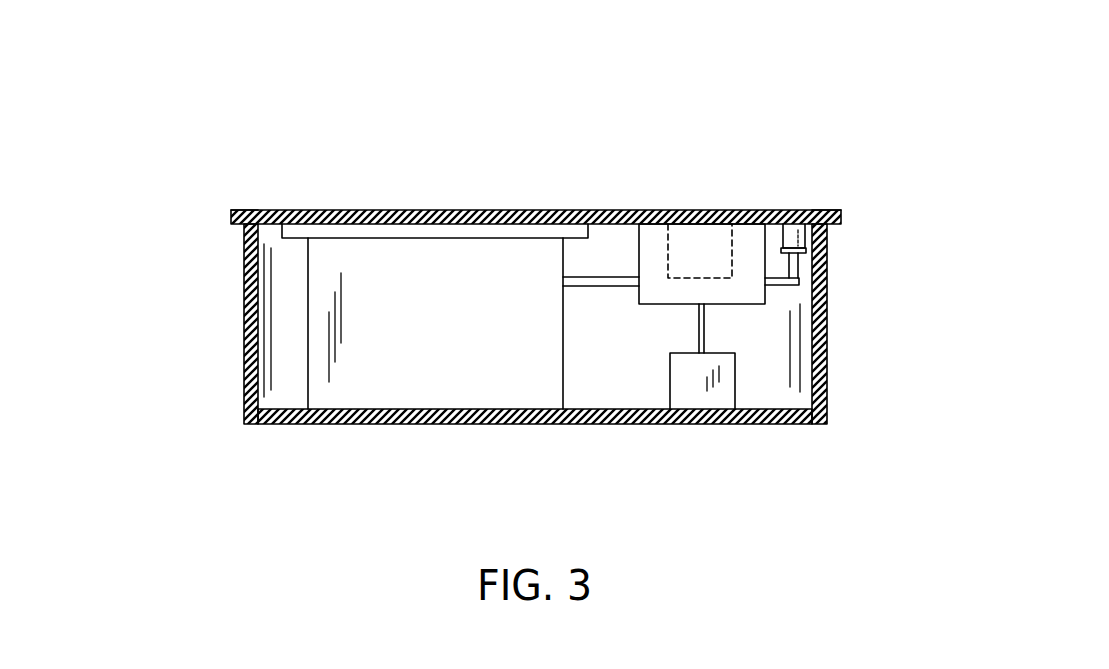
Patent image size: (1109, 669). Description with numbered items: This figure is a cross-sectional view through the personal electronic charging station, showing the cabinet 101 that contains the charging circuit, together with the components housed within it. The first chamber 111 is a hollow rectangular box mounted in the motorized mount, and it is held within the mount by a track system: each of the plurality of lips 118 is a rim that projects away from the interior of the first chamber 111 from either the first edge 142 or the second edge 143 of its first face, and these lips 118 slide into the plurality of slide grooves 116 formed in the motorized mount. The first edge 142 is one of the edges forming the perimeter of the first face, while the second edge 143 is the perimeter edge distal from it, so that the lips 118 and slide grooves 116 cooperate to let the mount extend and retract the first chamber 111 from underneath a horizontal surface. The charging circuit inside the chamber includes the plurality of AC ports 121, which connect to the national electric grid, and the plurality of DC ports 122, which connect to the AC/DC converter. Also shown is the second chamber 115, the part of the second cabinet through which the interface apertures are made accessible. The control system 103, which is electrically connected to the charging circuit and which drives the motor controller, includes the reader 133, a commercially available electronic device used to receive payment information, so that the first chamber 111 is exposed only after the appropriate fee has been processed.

The cabinet 101 is at (212, 435).
The control system 103 is at (686, 378).
The first chamber 111 is at (827, 365).
The second chamber 115 is at (797, 213).
The slide grooves 116 is at (242, 228).
The lips 118 is at (231, 216).
The AC ports 121 is at (655, 235).
The DC ports 122 is at (703, 235).
The reader 133 is at (452, 368).
The first edge 142 is at (258, 211).
The second edge 143 is at (818, 211).